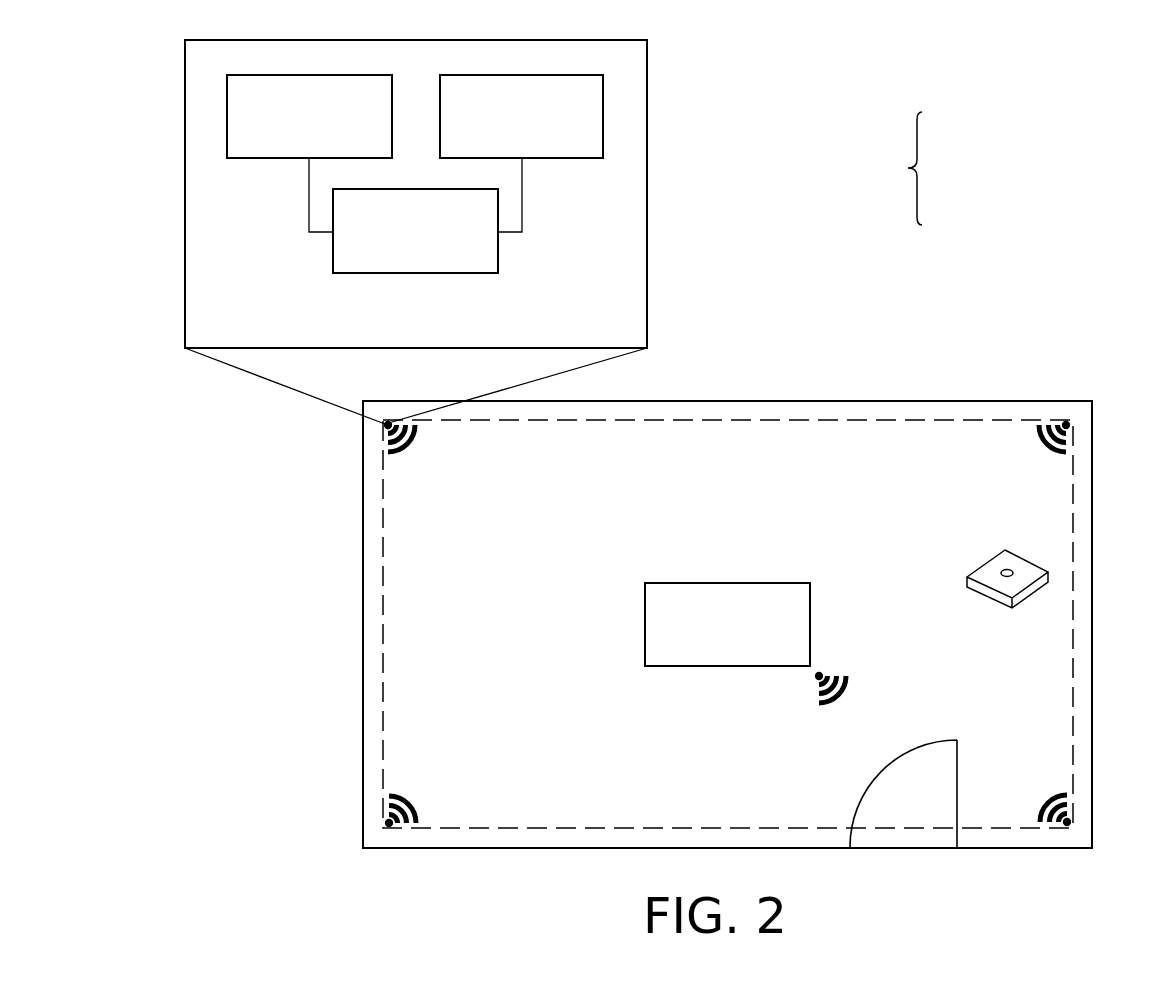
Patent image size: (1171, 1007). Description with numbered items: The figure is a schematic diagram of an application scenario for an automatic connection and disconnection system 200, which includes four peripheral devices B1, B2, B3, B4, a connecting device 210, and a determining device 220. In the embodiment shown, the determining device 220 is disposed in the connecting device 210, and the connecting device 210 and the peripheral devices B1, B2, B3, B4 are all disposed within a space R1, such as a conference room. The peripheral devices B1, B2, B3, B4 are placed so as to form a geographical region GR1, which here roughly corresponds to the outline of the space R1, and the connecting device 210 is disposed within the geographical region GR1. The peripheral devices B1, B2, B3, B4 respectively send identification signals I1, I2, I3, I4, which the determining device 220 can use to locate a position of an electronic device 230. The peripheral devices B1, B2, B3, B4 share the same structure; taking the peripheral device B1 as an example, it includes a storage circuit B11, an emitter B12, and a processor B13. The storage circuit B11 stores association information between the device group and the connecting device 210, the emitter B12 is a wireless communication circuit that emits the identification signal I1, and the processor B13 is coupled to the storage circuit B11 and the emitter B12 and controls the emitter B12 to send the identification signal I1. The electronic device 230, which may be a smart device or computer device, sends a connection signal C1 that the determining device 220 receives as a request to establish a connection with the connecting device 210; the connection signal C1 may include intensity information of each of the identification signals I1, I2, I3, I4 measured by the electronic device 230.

The automatic connection and disconnection system 200 is at (933, 168).
The peripheral device B1 is at (647, 272).
The peripheral device B2 is at (387, 827).
The peripheral device B3 is at (1073, 818).
The peripheral device B4 is at (1067, 422).
The storage circuit B11 is at (290, 160).
The emitter B12 is at (540, 160).
The processor B13 is at (408, 275).
The identification signal I1 is at (410, 452).
The identification signal I2 is at (412, 798).
The identification signal I3 is at (1047, 802).
The identification signal I4 is at (1043, 455).
The connection signal C1 is at (830, 707).
The electronic device 230 is at (728, 583).
The connecting device 210 is at (1005, 607).
The determining device 220 is at (995, 593).
The space R1 is at (922, 398).
The geographical region GR1 is at (830, 418).